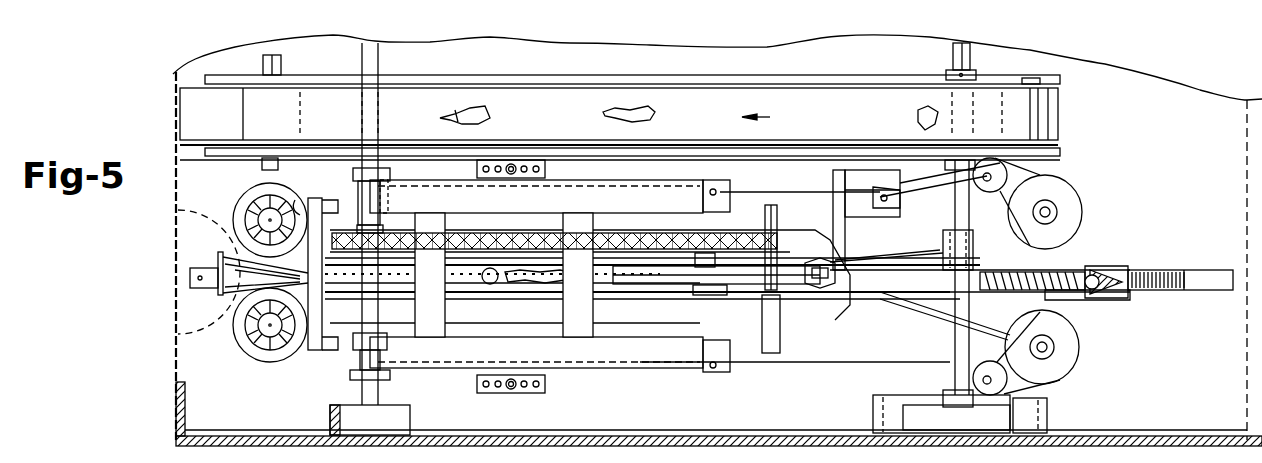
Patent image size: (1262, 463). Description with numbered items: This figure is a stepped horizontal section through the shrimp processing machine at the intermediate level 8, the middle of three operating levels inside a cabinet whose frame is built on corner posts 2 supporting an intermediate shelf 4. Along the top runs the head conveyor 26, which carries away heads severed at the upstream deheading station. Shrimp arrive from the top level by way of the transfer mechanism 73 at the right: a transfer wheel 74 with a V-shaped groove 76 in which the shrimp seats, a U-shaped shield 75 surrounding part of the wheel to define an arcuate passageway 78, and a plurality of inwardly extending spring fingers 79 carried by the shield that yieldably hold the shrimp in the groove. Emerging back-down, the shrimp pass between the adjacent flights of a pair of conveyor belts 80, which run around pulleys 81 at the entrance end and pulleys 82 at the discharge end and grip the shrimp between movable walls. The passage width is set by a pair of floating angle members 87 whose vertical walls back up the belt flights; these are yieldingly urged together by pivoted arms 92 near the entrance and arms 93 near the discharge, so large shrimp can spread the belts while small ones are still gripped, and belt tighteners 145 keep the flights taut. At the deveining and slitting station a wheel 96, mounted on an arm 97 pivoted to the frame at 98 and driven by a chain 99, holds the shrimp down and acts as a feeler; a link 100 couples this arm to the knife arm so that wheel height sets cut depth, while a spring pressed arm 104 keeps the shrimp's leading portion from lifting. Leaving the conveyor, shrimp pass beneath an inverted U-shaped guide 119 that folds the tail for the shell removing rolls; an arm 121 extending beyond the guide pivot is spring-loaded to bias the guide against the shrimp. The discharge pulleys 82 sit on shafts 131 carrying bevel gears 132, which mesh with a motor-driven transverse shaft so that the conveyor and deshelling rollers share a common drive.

The corner post 2 is at (177, 405).
The intermediate shelf 4 is at (1190, 204).
The intermediate level 8 is at (195, 372).
The head conveyor 26 is at (525, 93).
The cutting head assembly 73 is at (1120, 250).
The transfer wheel 74 is at (1072, 270).
The shield 75 is at (1128, 268).
The groove 76 is at (890, 293).
The arcuate passageway 78 is at (1115, 300).
The spring finger 79 is at (1156, 272).
The conveyor belt 80 is at (1008, 252).
The pulley 81 is at (1068, 196).
The pulley 82 is at (252, 192).
The floating angle member 87 is at (800, 238).
The pivoted arm 92 is at (762, 313).
The arm 93 is at (318, 210).
The wheel 96 is at (676, 288).
The arm 97 is at (612, 385).
The pivot 98 is at (385, 195).
The chain 99 is at (628, 232).
The link 100 is at (513, 393).
The spring pressed arm 104 is at (822, 266).
The inverted U-shaped guide 119 is at (232, 278).
The arm 121 is at (222, 270).
The shaft 131 is at (268, 328).
The bevel gear 132 is at (250, 212).
The belt tightener 145 is at (1005, 172).